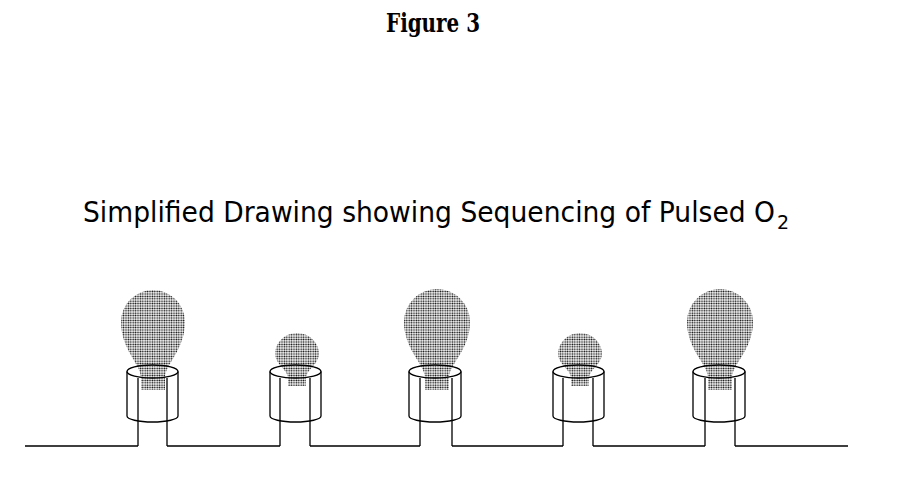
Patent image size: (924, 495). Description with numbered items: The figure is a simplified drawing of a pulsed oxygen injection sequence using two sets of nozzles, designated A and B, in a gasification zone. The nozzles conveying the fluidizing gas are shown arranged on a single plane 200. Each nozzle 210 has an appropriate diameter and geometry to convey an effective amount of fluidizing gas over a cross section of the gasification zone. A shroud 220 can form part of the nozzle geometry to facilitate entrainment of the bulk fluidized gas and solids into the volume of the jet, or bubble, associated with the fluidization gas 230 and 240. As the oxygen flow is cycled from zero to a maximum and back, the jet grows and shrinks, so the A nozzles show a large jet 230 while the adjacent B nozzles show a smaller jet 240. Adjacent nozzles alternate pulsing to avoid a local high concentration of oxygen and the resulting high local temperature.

The single plane 200 is at (44, 432).
The nozzle 210 is at (128, 440).
The shroud 220 is at (181, 400).
The fluidization gas jet 230 is at (130, 293).
The fluidization gas jet 240 is at (318, 342).